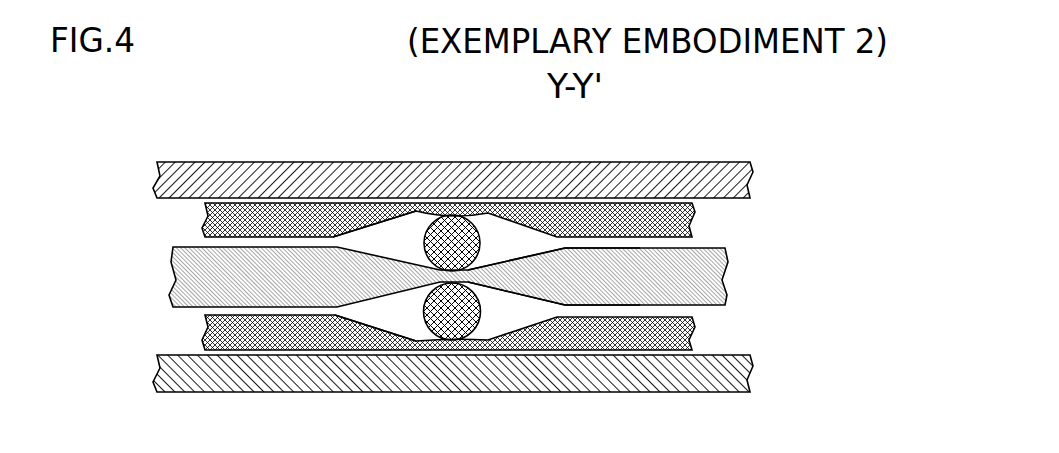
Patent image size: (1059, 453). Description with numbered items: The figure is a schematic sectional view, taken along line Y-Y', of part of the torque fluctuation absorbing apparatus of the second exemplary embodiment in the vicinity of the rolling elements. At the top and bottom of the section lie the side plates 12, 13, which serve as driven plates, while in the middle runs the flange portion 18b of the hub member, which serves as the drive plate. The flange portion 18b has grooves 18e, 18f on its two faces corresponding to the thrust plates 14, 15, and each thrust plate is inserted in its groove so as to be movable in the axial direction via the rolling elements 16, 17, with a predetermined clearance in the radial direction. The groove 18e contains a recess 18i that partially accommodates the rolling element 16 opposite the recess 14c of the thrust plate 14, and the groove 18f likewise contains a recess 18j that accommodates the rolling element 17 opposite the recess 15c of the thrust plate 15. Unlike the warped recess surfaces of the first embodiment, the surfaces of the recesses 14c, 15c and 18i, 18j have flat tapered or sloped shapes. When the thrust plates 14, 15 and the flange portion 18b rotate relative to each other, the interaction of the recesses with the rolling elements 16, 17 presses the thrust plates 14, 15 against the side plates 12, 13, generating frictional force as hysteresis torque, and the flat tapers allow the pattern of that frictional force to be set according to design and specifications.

The side plate 12 is at (245, 182).
The side plate 13 is at (242, 373).
The thrust plate 14 is at (303, 217).
The recess of thrust plate 14c is at (387, 223).
The thrust plate 15 is at (298, 335).
The recess of thrust plate 15c is at (385, 328).
The rolling element 16 is at (450, 230).
The rolling element 17 is at (453, 320).
The flange portion 18b is at (643, 268).
The recess of flange portion 18i is at (533, 412).
The recess of flange portion 18j is at (528, 345).
The groove 18e is at (605, 412).
The groove 18f is at (598, 350).